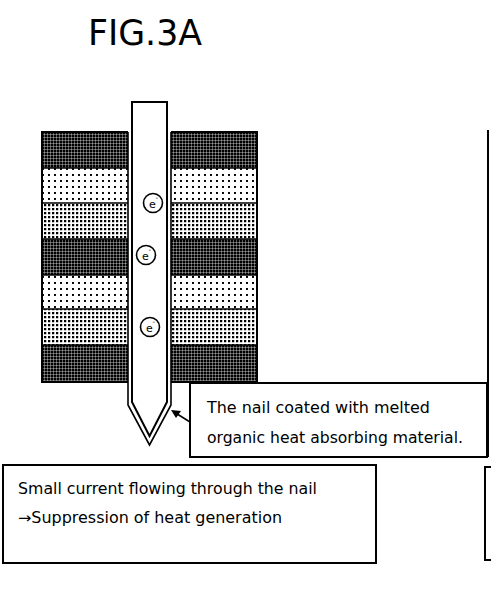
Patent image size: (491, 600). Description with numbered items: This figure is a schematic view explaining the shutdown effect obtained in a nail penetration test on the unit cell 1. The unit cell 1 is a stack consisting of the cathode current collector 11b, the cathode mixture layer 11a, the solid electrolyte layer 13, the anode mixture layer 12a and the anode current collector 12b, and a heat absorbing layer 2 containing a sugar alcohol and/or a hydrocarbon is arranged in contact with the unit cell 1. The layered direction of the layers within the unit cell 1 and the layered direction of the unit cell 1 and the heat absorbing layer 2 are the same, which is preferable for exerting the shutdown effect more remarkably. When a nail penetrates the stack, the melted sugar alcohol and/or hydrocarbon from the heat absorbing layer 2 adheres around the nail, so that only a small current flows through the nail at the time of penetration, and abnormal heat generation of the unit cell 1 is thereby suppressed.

The unit cell 1 is at (195, 257).
The heat absorbing layer 2 is at (257, 147).
The cathode mixture layer 11a is at (257, 222).
The cathode current collector 11b is at (257, 184).
The solid electrolyte layer 13 is at (257, 257).
The anode mixture layer 12a is at (257, 293).
The anode current collector 12b is at (177, 327).